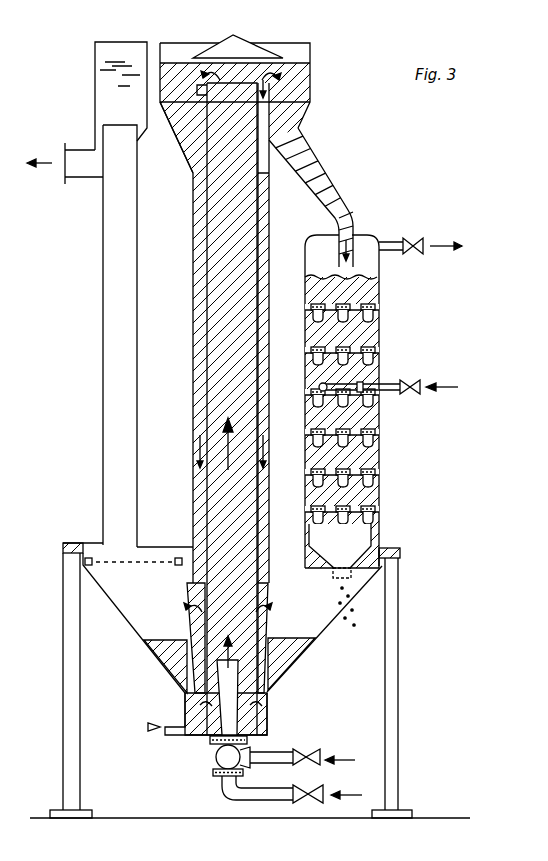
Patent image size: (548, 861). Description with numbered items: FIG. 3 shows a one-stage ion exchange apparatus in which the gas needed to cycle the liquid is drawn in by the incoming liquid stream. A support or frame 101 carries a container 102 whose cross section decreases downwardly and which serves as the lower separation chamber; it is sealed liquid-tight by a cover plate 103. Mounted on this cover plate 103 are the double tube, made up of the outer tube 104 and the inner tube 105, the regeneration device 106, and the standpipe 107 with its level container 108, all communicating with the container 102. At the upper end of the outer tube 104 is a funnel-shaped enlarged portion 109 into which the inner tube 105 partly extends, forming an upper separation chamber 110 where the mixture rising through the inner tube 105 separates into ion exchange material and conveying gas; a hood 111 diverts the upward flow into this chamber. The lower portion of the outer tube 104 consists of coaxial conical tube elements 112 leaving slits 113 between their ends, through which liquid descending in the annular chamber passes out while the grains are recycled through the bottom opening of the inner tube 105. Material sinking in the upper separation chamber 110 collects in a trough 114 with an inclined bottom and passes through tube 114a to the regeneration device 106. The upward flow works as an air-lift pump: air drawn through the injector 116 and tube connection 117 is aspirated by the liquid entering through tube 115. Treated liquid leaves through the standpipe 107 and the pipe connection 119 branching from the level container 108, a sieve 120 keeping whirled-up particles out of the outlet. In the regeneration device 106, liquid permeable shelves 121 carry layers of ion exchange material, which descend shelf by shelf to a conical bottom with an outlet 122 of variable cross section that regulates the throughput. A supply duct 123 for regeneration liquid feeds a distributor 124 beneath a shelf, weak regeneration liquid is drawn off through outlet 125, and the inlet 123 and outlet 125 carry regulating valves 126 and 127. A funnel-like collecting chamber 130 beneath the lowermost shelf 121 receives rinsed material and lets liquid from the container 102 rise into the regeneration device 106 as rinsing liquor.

The support or frame 101 is at (398, 650).
The container 102 is at (324, 632).
The cover plate 103 is at (180, 547).
The outer tube 104 is at (268, 352).
The inner tube 105 is at (257, 268).
The regeneration device 106 is at (380, 343).
The standpipe 107 is at (137, 285).
The level container 108 is at (95, 90).
The funnel-shaped enlarged portion 109 is at (300, 129).
The separation chamber 110 is at (178, 140).
The hood 111 is at (246, 36).
The conical tube elements 112 is at (268, 633).
The slits 113 is at (278, 612).
The trough 114 is at (283, 68).
The tube 114a is at (322, 186).
The tube 115 is at (245, 792).
The injector 116 is at (216, 752).
The tube connection 117 is at (280, 752).
The pipe connection 119 is at (70, 155).
The sieve 120 is at (128, 565).
The liquid permeable shelves 121 is at (380, 513).
The outlet 122 is at (360, 575).
The supply duct 123 is at (388, 385).
The distributor 124 is at (378, 392).
The outlet 125 is at (398, 242).
The regulating valve 126 is at (408, 393).
The regulating valve 127 is at (414, 253).
The funnel-like collecting chamber 130 is at (375, 540).